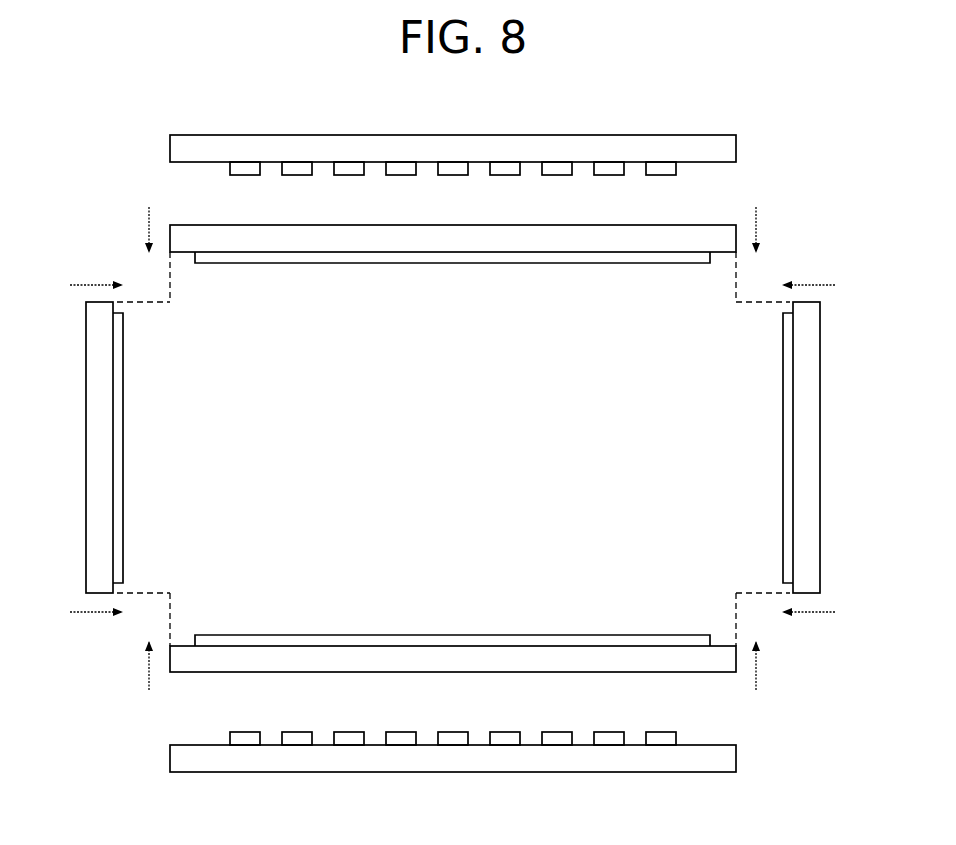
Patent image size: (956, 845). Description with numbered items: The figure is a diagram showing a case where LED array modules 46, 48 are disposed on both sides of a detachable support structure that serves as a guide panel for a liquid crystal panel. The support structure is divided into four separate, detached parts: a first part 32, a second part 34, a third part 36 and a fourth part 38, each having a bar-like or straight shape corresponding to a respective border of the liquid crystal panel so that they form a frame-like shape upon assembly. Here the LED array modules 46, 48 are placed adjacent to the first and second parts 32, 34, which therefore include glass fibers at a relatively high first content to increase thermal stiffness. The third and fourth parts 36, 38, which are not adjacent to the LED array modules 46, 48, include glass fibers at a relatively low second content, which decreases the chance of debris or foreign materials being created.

The first part 32 is at (435, 243).
The second part 34 is at (478, 665).
The third part 36 is at (97, 461).
The fourth part 38 is at (808, 445).
The LED array module 46 is at (723, 147).
The LED array module 48 is at (670, 168).